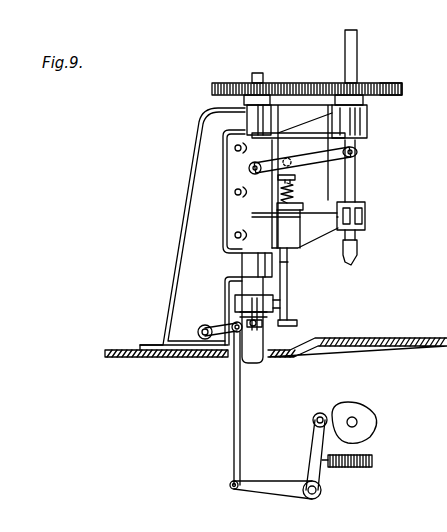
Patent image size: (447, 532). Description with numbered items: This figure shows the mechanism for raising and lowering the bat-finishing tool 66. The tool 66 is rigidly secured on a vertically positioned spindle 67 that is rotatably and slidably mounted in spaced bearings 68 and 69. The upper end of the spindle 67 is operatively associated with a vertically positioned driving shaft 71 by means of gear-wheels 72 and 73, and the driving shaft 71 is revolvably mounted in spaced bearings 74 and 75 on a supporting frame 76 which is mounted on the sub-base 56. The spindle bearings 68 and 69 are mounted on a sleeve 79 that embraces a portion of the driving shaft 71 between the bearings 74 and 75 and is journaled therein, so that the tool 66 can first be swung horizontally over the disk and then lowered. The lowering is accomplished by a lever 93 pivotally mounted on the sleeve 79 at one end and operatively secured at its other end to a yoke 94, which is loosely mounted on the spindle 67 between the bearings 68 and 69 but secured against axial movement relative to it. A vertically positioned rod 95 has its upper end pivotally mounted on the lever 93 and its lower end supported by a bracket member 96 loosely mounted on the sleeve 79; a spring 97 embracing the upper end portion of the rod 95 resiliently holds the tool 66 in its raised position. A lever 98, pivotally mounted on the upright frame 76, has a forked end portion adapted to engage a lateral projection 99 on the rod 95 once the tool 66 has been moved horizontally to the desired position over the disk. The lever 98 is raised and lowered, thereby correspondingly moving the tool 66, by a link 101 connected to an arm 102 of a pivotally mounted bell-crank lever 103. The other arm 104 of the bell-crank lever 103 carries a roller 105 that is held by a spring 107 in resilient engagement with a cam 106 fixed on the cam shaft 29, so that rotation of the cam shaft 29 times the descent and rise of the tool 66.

The cam-shaft 29 is at (357, 424).
The sub-base 56 is at (381, 338).
The bat-finishing tool 66 is at (357, 255).
The spindle 67 is at (357, 46).
The bearing 68 is at (367, 120).
The bearing 69 is at (366, 215).
The driving shaft 71 is at (258, 73).
The gear-wheel 72 is at (222, 82).
The gear-wheel 73 is at (394, 79).
The bearing 74 is at (279, 106).
The bearing 75 is at (288, 283).
The supporting frame 76 is at (178, 252).
The sleeve 79 is at (252, 212).
The lever 93 is at (307, 158).
The yoke 94 is at (358, 150).
The rod 95 is at (296, 177).
The bracket member 96 is at (283, 300).
The spring 97 is at (300, 194).
The lever 98 is at (222, 328).
The lateral projection 99 is at (298, 322).
The link 101 is at (240, 381).
The arm 102 is at (257, 488).
The bell-crank lever 103 is at (306, 480).
The arm 104 is at (316, 437).
The roller 105 is at (320, 413).
The cam 106 is at (370, 405).
The spring 107 is at (355, 470).